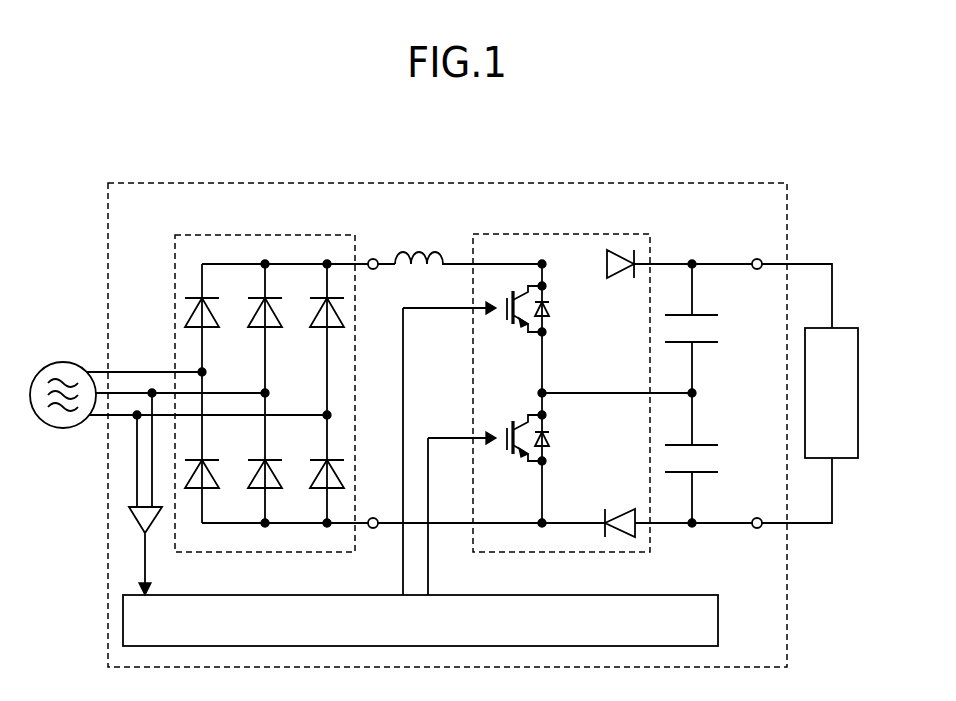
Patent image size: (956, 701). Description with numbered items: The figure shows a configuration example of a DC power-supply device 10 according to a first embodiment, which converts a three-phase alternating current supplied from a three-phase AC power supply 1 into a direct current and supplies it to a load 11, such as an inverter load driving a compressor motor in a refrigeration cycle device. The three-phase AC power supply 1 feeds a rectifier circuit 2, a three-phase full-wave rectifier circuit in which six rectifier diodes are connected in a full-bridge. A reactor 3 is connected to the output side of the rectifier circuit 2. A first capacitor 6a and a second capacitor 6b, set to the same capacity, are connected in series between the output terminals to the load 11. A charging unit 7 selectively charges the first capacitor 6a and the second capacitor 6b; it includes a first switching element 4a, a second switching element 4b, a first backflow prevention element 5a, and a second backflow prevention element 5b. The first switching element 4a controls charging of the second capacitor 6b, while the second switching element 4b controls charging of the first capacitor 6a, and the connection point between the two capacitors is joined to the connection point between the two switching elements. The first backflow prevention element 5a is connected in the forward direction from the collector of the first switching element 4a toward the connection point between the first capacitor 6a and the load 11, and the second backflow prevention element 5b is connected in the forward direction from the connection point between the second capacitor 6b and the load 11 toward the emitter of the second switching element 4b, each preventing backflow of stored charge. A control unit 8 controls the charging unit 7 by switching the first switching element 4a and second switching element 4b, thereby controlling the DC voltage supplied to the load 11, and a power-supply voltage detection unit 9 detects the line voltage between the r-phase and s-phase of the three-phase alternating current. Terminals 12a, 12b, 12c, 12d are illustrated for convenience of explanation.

The three-phase AC power supply 1 is at (63, 362).
The rectifier circuit 2 is at (234, 235).
The reactor 3 is at (412, 252).
The first switching element 4a is at (504, 312).
The second switching element 4b is at (504, 431).
The first backflow prevention element 5a is at (622, 275).
The second backflow prevention element 5b is at (615, 512).
The first capacitor 6a is at (671, 315).
The second capacitor 6b is at (671, 443).
The charging unit 7 is at (533, 234).
The control unit 8 is at (206, 581).
The power-supply voltage detection unit 9 is at (139, 526).
The DC power-supply device 10 is at (675, 183).
The load 11 is at (841, 328).
The terminal 12a is at (372, 258).
The terminal 12b is at (372, 518).
The terminal 12c is at (756, 258).
The terminal 12d is at (756, 517).